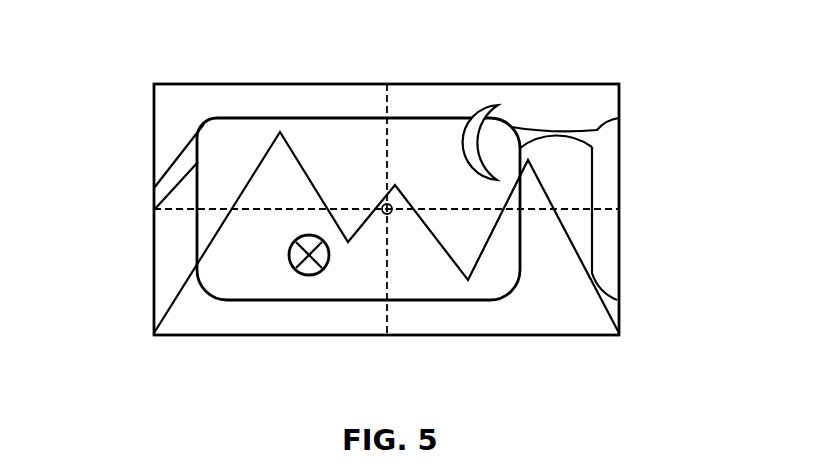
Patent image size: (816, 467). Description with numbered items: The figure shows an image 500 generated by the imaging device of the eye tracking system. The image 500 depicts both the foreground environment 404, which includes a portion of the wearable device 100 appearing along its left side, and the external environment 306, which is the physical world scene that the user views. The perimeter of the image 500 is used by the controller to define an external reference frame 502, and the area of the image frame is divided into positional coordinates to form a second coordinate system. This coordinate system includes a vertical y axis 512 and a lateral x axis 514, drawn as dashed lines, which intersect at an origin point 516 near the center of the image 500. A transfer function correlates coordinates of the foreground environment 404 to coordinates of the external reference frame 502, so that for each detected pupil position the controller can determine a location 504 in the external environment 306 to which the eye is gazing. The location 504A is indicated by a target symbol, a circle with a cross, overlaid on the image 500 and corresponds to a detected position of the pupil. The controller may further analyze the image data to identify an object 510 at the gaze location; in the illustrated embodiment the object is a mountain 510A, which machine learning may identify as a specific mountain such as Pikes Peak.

The image 500 is at (243, 52).
The external reference frame 502 is at (543, 84).
The foreground environment 404 is at (202, 115).
The wearable device 100 is at (178, 158).
The object 510 is at (273, 245).
The mountain 510A is at (230, 269).
The vertical y axis 512 is at (376, 97).
The origin point 516 is at (384, 204).
The location 504 is at (292, 266).
The location 504A is at (309, 276).
The lateral x axis 514 is at (575, 210).
The external environment 306 is at (582, 313).